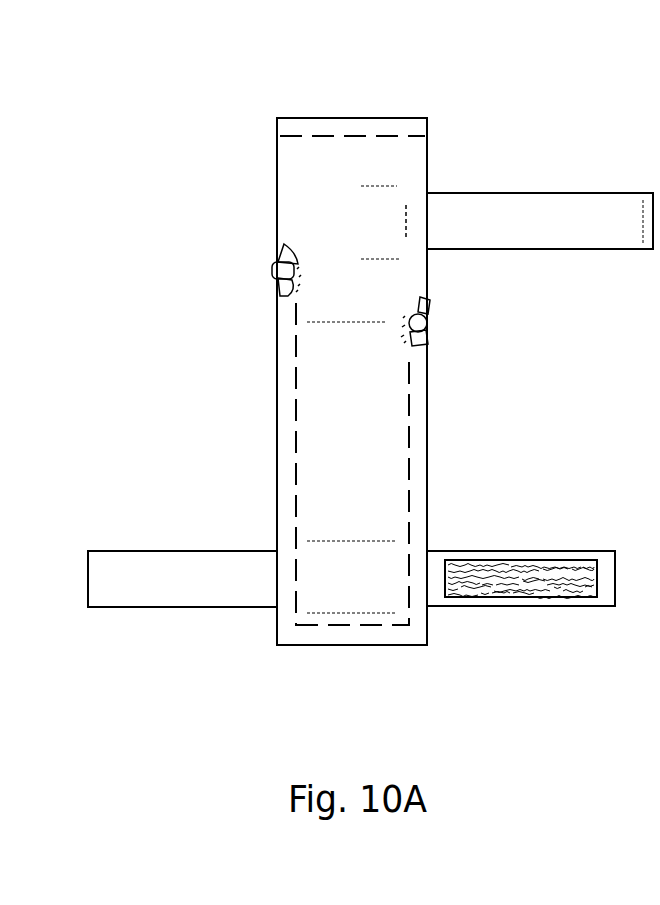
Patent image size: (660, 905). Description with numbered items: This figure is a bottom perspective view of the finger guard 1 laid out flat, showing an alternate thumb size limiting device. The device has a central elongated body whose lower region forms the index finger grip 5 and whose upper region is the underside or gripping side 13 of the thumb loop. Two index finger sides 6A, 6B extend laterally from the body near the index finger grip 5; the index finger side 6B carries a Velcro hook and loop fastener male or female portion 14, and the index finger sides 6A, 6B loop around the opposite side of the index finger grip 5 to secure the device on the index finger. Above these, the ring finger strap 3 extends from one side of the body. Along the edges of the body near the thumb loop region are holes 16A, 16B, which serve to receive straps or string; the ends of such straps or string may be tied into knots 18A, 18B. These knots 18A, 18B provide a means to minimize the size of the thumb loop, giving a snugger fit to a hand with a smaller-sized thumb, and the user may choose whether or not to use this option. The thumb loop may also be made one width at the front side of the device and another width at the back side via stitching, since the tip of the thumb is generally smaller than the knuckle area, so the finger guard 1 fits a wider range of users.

The finger guard 1 is at (556, 82).
The ring finger strap 3 is at (503, 237).
The index finger grip 5 is at (360, 594).
The index finger side 6A is at (205, 598).
The index finger side 6B is at (528, 607).
The gripping side of thumb loop 13 is at (366, 232).
The hook and loop fastener portion 14 is at (563, 580).
The hole 16A is at (298, 264).
The hole 16B is at (410, 332).
The knot 18A is at (285, 268).
The knot 18B is at (410, 323).